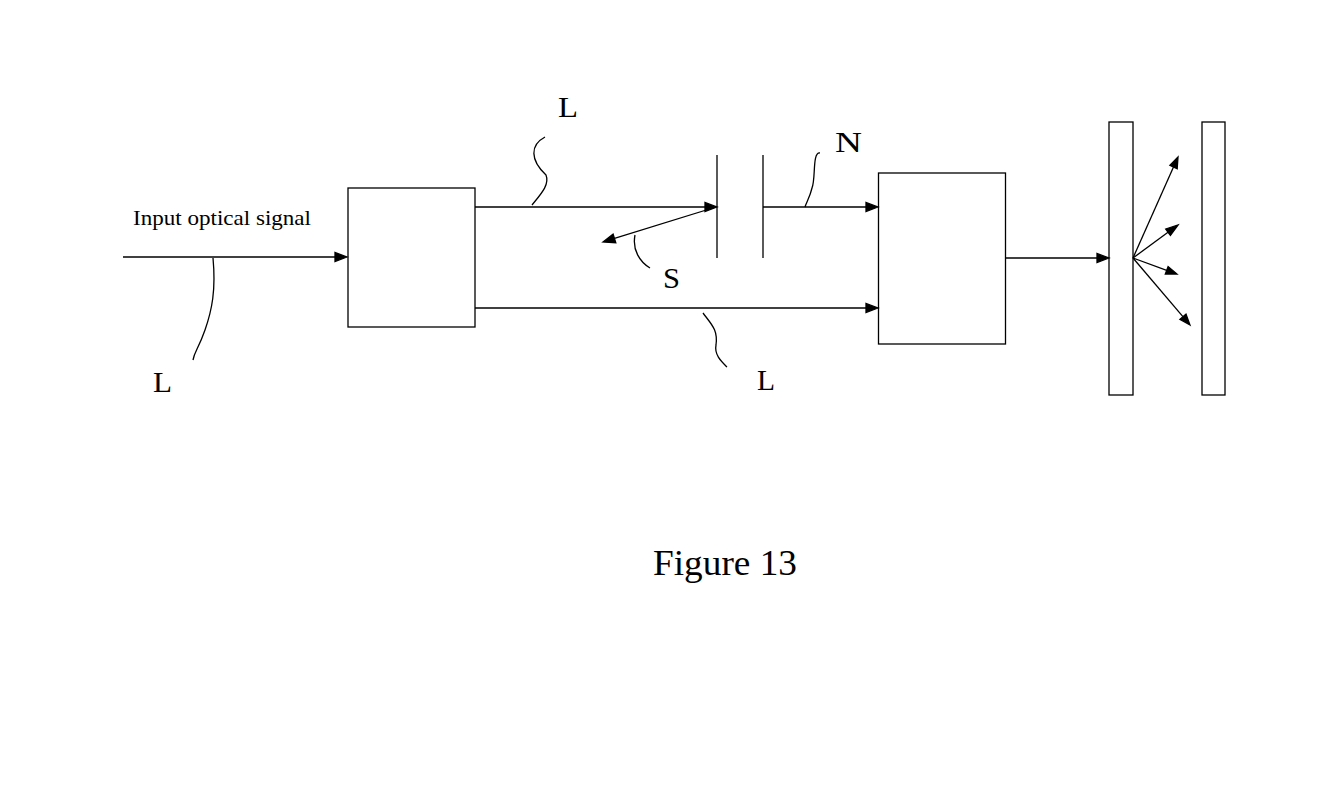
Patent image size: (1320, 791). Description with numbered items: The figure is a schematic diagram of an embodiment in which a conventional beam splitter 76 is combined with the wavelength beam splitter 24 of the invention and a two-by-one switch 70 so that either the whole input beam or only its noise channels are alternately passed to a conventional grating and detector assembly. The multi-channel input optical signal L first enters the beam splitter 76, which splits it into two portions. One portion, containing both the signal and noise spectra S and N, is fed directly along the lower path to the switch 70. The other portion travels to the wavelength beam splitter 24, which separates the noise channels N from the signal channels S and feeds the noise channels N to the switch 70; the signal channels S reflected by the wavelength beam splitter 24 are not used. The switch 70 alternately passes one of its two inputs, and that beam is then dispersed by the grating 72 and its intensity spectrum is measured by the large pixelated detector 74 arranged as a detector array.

The wavelength beam splitter 24 is at (717, 182).
The 2×1 switch 70 is at (937, 174).
The grating 72 is at (1122, 117).
The detector 74 is at (1213, 117).
The beam splitter 76 is at (404, 188).